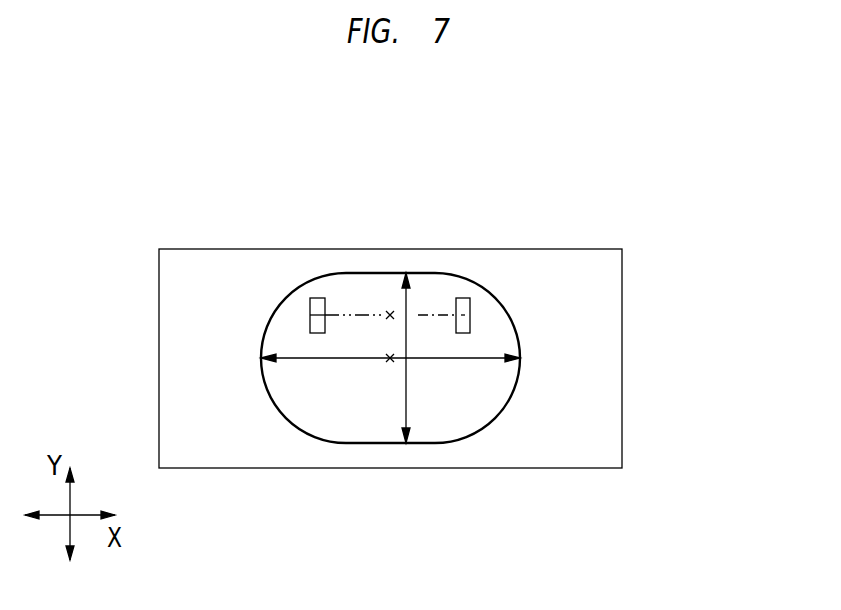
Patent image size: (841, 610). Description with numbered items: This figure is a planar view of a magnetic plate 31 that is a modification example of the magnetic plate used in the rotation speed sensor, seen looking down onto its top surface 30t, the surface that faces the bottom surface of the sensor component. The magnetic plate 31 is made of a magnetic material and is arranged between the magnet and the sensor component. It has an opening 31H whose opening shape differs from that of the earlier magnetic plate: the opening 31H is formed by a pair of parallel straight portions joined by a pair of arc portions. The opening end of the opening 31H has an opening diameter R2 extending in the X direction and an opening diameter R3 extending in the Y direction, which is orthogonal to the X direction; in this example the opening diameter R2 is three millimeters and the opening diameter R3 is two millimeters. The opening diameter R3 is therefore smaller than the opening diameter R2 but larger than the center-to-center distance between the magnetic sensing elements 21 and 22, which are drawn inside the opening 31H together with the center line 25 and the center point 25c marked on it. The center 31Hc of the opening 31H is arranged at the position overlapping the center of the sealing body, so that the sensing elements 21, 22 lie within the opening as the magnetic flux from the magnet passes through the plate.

The magnetic plate 31 is at (650, 243).
The top surface 30t is at (603, 287).
The opening 31H is at (457, 433).
The center of the opening 31Hc is at (390, 360).
The magnetic sensing element 21 is at (310, 321).
The magnetic sensing element 22 is at (470, 338).
The center axis line 25 is at (418, 313).
The center point of axis line 25c is at (387, 315).
The opening diameter R2 is at (435, 358).
The opening diameter R3 is at (406, 412).